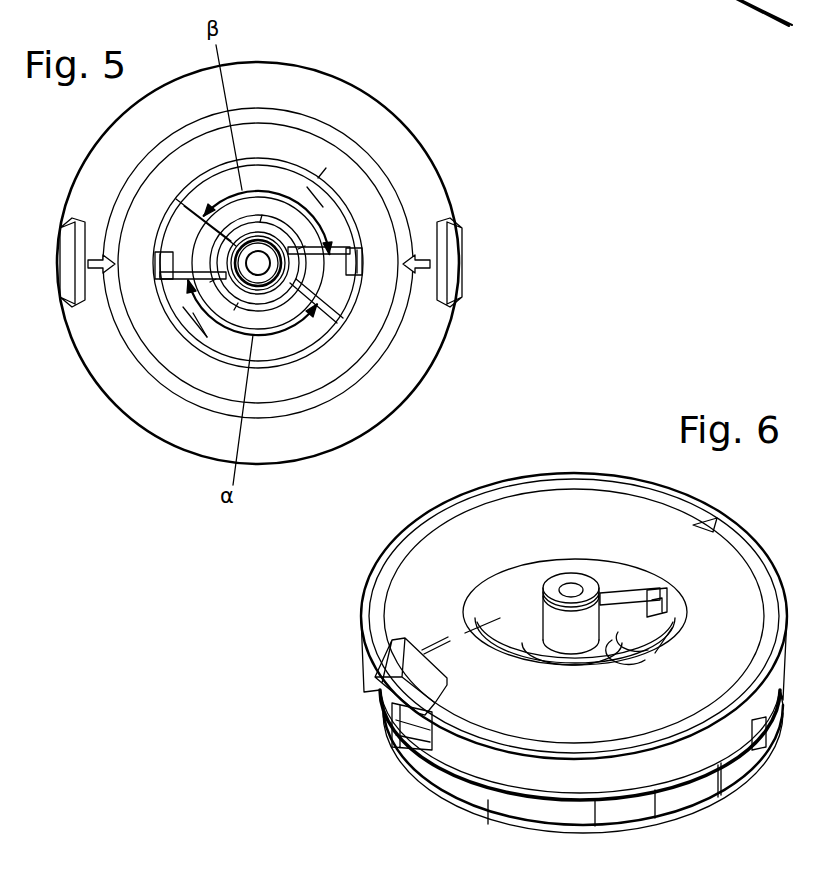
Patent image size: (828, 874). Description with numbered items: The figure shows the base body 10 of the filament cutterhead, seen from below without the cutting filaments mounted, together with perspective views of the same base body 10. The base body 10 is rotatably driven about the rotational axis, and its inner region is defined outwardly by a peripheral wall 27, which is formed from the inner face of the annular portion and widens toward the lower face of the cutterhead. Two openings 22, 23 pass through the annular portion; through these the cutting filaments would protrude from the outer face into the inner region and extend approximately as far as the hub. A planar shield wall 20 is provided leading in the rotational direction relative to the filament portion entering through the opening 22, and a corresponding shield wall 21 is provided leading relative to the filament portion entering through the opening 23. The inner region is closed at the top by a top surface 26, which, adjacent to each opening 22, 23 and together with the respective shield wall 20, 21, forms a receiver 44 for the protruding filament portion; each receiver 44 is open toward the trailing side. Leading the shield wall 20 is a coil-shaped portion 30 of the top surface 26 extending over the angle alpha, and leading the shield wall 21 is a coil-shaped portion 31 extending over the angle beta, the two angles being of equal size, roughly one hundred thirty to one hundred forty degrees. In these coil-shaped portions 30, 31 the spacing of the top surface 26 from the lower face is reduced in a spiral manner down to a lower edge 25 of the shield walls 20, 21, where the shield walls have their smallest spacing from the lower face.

In FIG. 5, the base body 10 is at (482, 288).
In FIG. 5, the shield wall 20 is at (196, 262).
In FIG. 5, the shield wall 21 is at (329, 264).
In FIG. 6, the shield wall 21 is at (623, 616).
In FIG. 5, the opening 22 is at (156, 255).
In FIG. 5, the opening 23 is at (362, 260).
In FIG. 6, the opening 23 is at (667, 593).
In FIG. 6, the lower edge 25 is at (620, 598).
In FIG. 5, the top surface 26 is at (305, 190).
In FIG. 6, the top surface 26 is at (628, 647).
In FIG. 5, the peripheral wall 27 is at (293, 135).
In FIG. 6, the peripheral wall 27 is at (533, 521).
In FIG. 5, the coil-shaped portion 30 is at (193, 313).
In FIG. 5, the coil-shaped portion 31 is at (322, 206).
In FIG. 6, the coil-shaped portion 31 is at (512, 606).
In FIG. 6, the receiver 44 is at (641, 596).